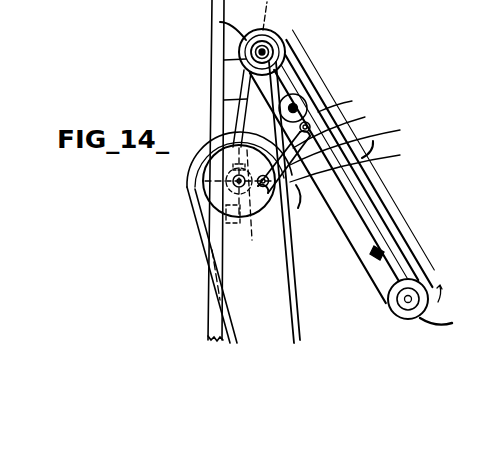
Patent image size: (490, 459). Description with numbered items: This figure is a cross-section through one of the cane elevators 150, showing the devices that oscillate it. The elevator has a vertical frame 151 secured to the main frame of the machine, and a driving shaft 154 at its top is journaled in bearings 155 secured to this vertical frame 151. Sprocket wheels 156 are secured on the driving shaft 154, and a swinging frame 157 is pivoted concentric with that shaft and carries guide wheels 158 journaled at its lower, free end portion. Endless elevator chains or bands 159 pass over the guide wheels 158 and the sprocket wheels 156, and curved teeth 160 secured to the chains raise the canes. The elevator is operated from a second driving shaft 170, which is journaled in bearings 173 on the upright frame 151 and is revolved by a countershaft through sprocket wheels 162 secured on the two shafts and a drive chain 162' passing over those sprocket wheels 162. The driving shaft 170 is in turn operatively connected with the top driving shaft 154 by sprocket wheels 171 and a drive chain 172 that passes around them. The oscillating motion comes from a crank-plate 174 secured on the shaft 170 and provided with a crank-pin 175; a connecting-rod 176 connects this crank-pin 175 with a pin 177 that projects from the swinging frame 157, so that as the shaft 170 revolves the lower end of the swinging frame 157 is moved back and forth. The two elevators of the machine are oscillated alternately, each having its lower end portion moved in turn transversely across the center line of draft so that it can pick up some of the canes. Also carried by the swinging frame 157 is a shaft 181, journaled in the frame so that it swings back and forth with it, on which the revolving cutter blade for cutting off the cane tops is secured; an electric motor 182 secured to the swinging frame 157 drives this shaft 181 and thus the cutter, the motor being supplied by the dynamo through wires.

The elevator 150 is at (358, 256).
The vertical frame 151 is at (212, 318).
The driving shaft 154 is at (266, 44).
The bearings 155 is at (233, 66).
The sprocket wheels 156 is at (278, 52).
The swinging frame 157 is at (383, 264).
The guide wheels 158 is at (404, 310).
The endless elevator chains 159 is at (386, 212).
The curved teeth 160 is at (399, 137).
The sprocket wheels 162 is at (224, 237).
The drive chain 162' is at (273, 202).
The driving shaft 170 is at (233, 183).
The sprocket wheels 171 is at (222, 175).
The drive chain 172 is at (236, 98).
The bearings 173 is at (251, 240).
The crank-plate 174 is at (270, 190).
The crank-pin 175 is at (384, 167).
The connecting-rod 176 is at (362, 139).
The pin 177 is at (345, 115).
The shaft 181 is at (302, 98).
The electric motor 182 is at (307, 121).